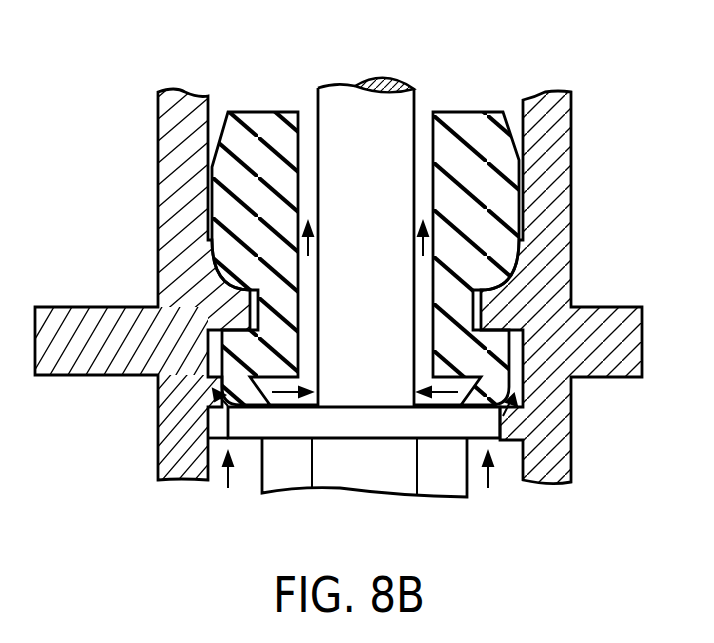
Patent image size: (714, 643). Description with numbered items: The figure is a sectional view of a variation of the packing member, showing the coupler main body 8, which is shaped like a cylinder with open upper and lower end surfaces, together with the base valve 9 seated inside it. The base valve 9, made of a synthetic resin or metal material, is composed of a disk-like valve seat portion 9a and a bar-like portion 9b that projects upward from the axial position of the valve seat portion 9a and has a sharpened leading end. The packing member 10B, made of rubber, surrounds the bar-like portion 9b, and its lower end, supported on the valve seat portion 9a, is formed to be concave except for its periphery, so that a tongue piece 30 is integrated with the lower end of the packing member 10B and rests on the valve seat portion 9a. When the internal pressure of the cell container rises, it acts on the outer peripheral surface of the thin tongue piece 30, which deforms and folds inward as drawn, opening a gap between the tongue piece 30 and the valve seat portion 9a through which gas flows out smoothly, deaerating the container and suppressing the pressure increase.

The coupler main body 8 is at (573, 158).
The base valve 9 is at (405, 80).
The valve seat portion 9a is at (295, 428).
The bar-like portion 9b is at (337, 92).
The packing member 10B is at (266, 122).
The tongue piece 30 is at (218, 398).